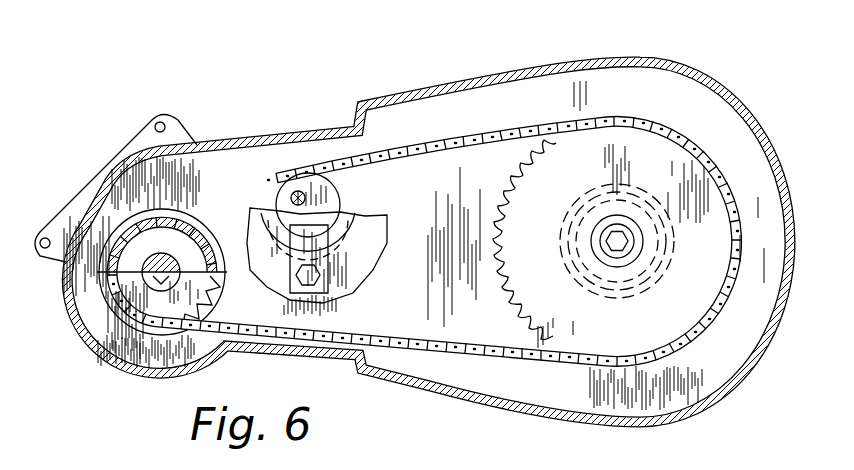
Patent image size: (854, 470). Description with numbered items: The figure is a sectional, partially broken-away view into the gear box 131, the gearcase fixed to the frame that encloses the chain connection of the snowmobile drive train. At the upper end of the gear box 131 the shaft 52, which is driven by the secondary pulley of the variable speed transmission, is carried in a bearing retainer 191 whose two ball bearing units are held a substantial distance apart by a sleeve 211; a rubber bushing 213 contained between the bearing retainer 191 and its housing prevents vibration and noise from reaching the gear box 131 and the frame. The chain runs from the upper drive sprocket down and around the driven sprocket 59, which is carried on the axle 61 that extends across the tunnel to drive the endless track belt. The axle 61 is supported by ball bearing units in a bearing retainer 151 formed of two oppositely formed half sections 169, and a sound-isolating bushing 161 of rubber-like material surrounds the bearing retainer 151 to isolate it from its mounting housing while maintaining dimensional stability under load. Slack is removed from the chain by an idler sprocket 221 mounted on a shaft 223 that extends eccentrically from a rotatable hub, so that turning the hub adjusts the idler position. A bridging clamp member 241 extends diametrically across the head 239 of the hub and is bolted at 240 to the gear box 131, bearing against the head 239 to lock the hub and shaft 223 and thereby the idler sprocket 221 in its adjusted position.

The gear box 131 is at (578, 64).
The driven sprocket 59 is at (643, 147).
The bushing 161 is at (676, 260).
The bearing retainer 151 is at (569, 221).
The half sections 169 is at (586, 275).
The axle 61 is at (611, 262).
The bushing 213 is at (134, 223).
The bearing retainer 191 is at (180, 248).
The shaft 52 is at (160, 256).
The sleeve 211 is at (140, 271).
The head 239 is at (350, 216).
The idler sprocket 221 is at (339, 186).
The shaft 223 is at (290, 195).
The bridging clamp member 241 is at (315, 261).
The bolt 240 is at (323, 275).